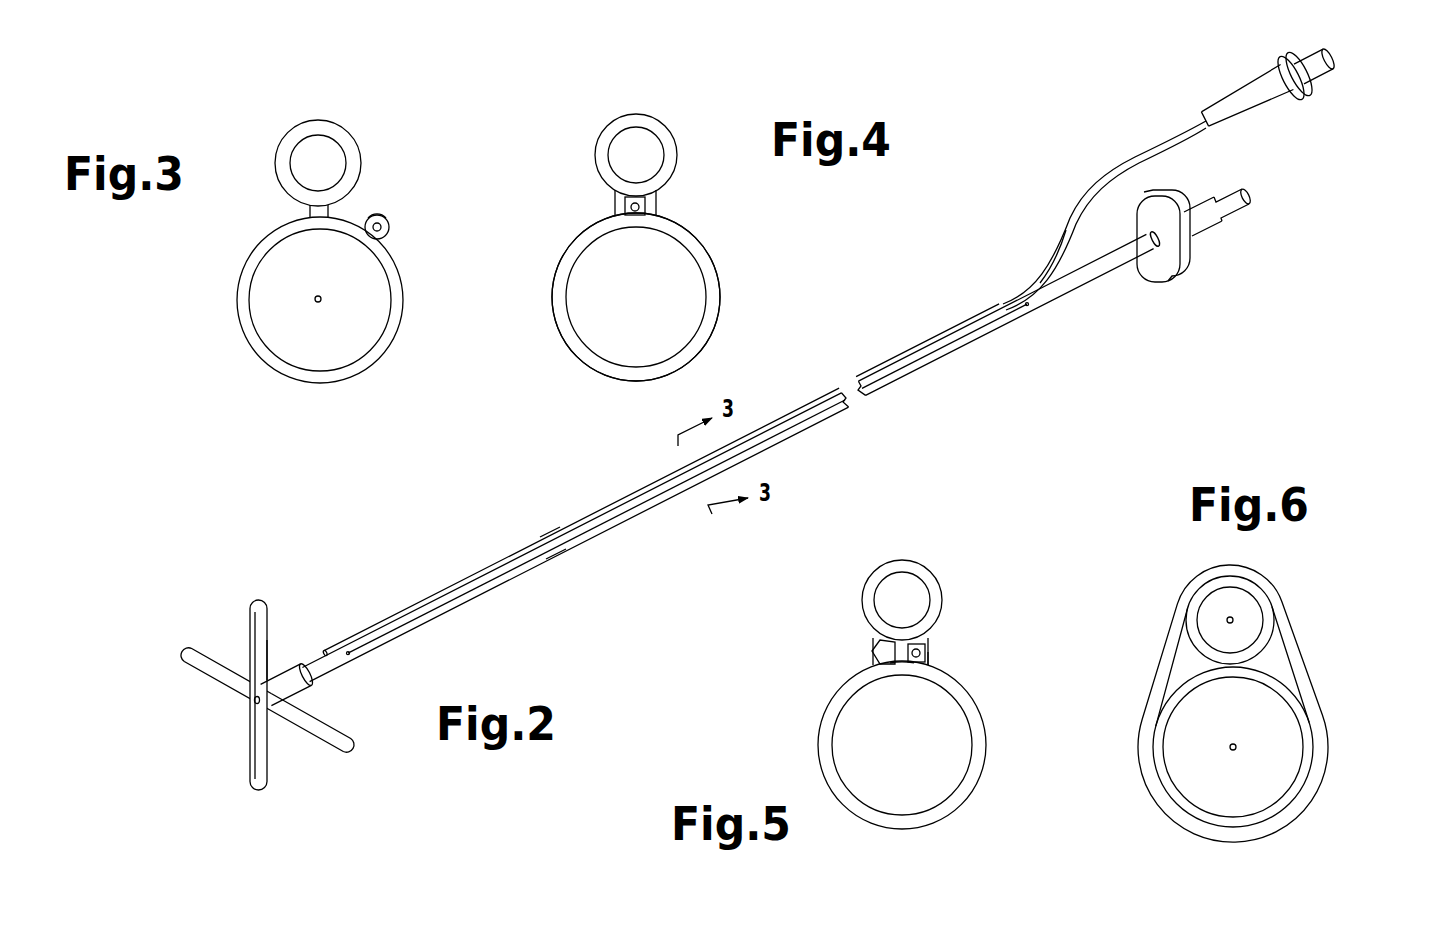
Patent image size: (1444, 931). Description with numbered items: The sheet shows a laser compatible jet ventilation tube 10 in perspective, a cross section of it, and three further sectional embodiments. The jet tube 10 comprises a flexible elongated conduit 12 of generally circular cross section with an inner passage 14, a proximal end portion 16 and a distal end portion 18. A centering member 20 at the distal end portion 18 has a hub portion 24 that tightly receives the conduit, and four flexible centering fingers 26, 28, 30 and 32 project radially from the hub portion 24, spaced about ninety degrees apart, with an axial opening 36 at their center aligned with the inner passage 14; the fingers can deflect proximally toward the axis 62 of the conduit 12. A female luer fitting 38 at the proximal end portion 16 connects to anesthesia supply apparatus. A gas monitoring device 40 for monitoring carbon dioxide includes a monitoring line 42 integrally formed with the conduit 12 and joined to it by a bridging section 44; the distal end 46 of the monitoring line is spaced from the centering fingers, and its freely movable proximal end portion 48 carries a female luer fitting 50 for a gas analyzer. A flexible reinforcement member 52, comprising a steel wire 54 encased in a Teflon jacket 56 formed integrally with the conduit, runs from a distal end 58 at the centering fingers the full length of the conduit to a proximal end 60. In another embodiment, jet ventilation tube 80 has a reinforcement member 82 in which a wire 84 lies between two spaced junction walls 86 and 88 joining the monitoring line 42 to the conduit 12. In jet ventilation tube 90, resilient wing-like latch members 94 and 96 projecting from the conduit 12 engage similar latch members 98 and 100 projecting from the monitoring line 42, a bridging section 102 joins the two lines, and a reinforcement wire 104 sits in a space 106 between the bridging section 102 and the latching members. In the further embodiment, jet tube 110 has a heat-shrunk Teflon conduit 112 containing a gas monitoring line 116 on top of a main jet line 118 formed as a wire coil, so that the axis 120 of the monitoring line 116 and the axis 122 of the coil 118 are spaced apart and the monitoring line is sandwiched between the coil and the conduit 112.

In FIG. 3, the jet ventilation tube 10 is at (311, 245).
In FIG. 3, the conduit 12 is at (405, 314).
In FIG. 4, the conduit 12 is at (714, 320).
In FIG. 5, the conduit 12 is at (977, 786).
In FIG. 2, the conduit 12 is at (823, 427).
In FIG. 3, the inner passage 14 is at (303, 363).
In FIG. 2, the proximal end portion 16 is at (1116, 266).
In FIG. 2, the distal end portion 18 is at (329, 680).
In FIG. 2, the centering member 20 is at (235, 671).
In FIG. 2, the hub portion 24 is at (283, 658).
In FIG. 2, the centering finger 26 is at (250, 637).
In FIG. 2, the centering finger 28 is at (326, 740).
In FIG. 2, the centering finger 30 is at (254, 781).
In FIG. 2, the centering finger 32 is at (200, 662).
In FIG. 2, the axial opening 36 is at (252, 703).
In FIG. 2, the female luer fitting 38 is at (1198, 198).
In FIG. 3, the gas monitoring device 40 is at (358, 152).
In FIG. 4, the gas monitoring device 40 is at (603, 132).
In FIG. 5, the gas monitoring device 40 is at (918, 558).
In FIG. 2, the gas monitoring device 40 is at (1046, 242).
In FIG. 3, the monitoring line 42 is at (332, 122).
In FIG. 4, the monitoring line 42 is at (668, 133).
In FIG. 5, the monitoring line 42 is at (934, 578).
In FIG. 2, the monitoring line 42 is at (543, 545).
In FIG. 3, the bridging section 44 is at (324, 208).
In FIG. 2, the distal end of monitoring line 46 is at (338, 644).
In FIG. 2, the proximal end portion of monitoring line 48 is at (1155, 142).
In FIG. 2, the female luer fitting 50 is at (1244, 88).
In FIG. 3, the reinforcement member 52 is at (394, 228).
In FIG. 2, the reinforcement member 52 is at (551, 563).
In FIG. 3, the wire 54 is at (386, 219).
In FIG. 3, the jacket 56 is at (386, 238).
In FIG. 2, the distal end of reinforcement member 58 is at (370, 652).
In FIG. 2, the proximal end of reinforcement member 60 is at (1026, 310).
In FIG. 3, the axis of the conduit 62 is at (316, 300).
In FIG. 4, the jet ventilation tube 80 is at (722, 284).
In FIG. 4, the reinforcement member 82 is at (658, 212).
In FIG. 4, the wire 84 is at (613, 212).
In FIG. 4, the junction wall 86 is at (614, 203).
In FIG. 4, the junction wall 88 is at (660, 194).
In FIG. 5, the jet ventilation tube 90 is at (890, 665).
In FIG. 5, the latch member 94 is at (876, 665).
In FIG. 5, the latch member 96 is at (932, 665).
In FIG. 5, the latch member 98 is at (872, 642).
In FIG. 5, the latch member 100 is at (928, 646).
In FIG. 5, the bridging section 102 is at (900, 660).
In FIG. 5, the reinforcement wire 104 is at (930, 638).
In FIG. 5, the space 106 is at (930, 655).
In FIG. 6, the jet ventilation tube 110 is at (1242, 688).
In FIG. 6, the conduit 112 is at (1160, 658).
In FIG. 6, the gas monitoring line 116 is at (1288, 636).
In FIG. 6, the main jet line 118 is at (1290, 702).
In FIG. 6, the axis of the monitoring line 120 is at (1231, 617).
In FIG. 6, the axis of the coil 122 is at (1236, 748).